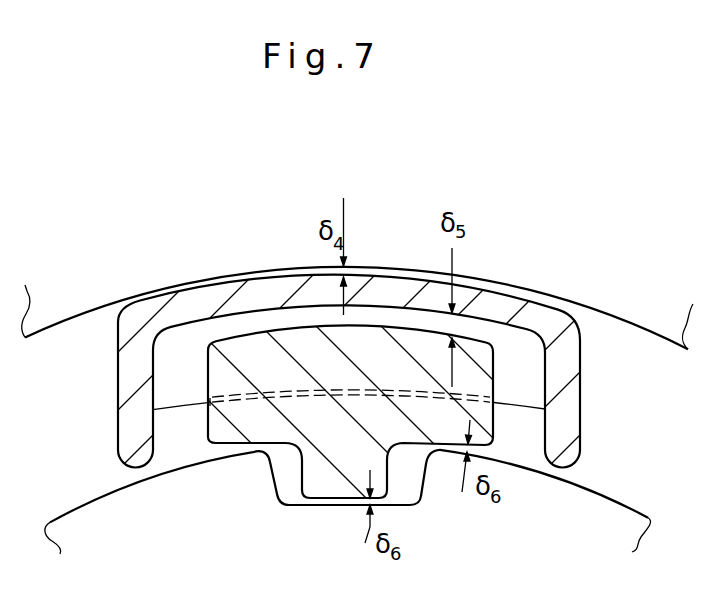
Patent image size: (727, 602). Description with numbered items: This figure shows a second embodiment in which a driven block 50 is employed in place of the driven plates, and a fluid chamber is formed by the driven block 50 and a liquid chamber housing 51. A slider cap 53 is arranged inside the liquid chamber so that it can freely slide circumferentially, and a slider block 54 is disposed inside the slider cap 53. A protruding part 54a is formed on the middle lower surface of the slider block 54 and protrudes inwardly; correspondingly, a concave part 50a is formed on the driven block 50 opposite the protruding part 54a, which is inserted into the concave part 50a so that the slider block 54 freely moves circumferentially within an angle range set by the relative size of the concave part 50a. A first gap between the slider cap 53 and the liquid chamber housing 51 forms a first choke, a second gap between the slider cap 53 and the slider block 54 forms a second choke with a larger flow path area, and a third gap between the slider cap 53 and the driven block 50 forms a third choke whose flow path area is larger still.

The driven block 50 is at (597, 512).
The concave part 50a is at (418, 481).
The liquid chamber housing 51 is at (627, 303).
The slider cap 53 is at (212, 300).
The slider block 54 is at (220, 437).
The protruding part 54a is at (322, 487).